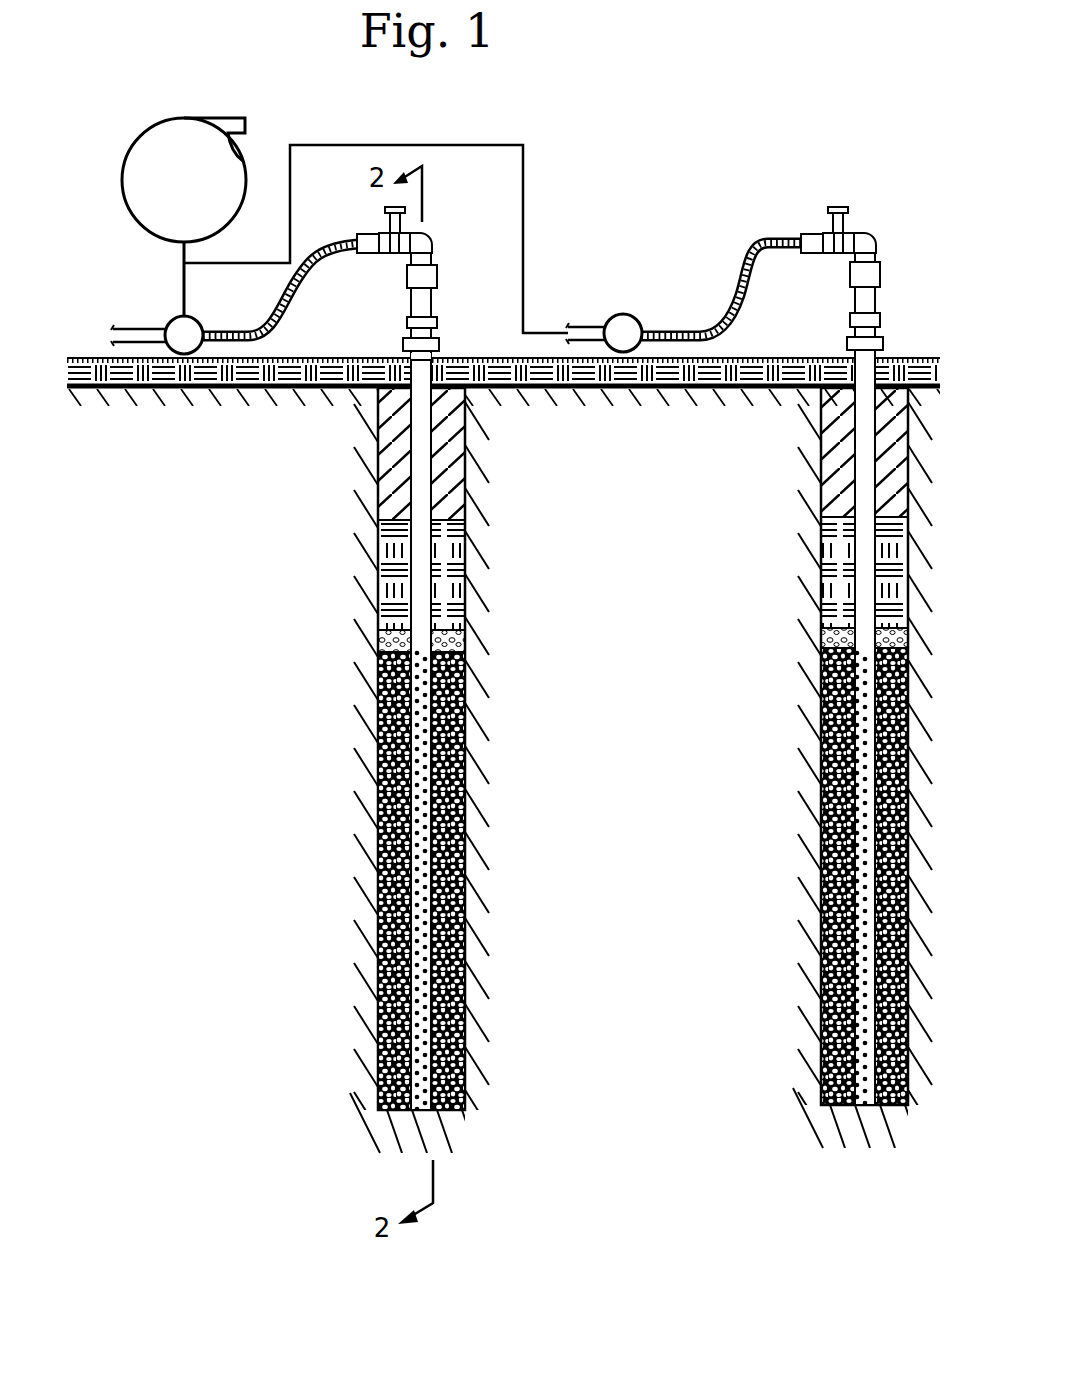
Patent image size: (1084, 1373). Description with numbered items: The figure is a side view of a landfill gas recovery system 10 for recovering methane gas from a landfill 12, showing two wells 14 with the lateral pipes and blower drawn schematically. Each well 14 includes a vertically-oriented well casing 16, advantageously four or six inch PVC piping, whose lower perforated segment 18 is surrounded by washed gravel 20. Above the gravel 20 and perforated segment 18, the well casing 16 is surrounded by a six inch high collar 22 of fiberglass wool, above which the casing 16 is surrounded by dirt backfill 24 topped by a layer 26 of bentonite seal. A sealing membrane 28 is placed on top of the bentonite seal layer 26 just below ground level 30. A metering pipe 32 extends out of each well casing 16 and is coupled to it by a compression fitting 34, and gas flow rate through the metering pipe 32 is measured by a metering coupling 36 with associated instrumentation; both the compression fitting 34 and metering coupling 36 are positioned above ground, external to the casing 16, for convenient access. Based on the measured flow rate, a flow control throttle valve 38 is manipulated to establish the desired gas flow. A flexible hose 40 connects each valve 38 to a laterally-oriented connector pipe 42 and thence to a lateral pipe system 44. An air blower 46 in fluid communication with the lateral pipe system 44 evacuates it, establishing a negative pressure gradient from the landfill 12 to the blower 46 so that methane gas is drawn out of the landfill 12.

The landfill gas recovery system 10 is at (610, 193).
The landfill 12 is at (188, 591).
The wells 14 is at (733, 636).
The well casing 16 is at (418, 547).
The lower perforated segment 18 is at (421, 823).
The washed gravel 20 is at (456, 868).
The collar 22 is at (450, 640).
The dirt backfill 24 is at (450, 578).
The layer of bentonite seal 26 is at (450, 492).
The sealing membrane 28 is at (540, 392).
The ground level 30 is at (491, 353).
The metering pipe 32 is at (410, 300).
The compression fitting 34 is at (406, 323).
The metering coupling 36 is at (439, 275).
The flow control throttle valve 38 is at (386, 222).
The flexible hose 40 is at (286, 311).
The connector pipe 42 is at (173, 322).
The lateral pipe system 44 is at (182, 256).
The air blower 46 is at (128, 205).